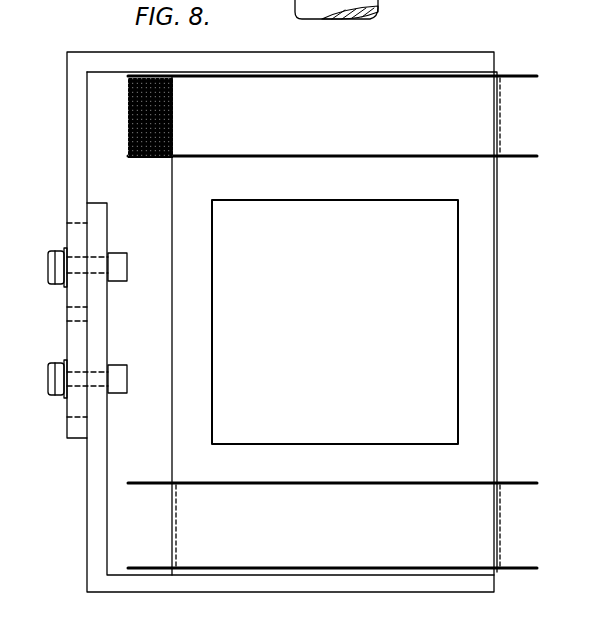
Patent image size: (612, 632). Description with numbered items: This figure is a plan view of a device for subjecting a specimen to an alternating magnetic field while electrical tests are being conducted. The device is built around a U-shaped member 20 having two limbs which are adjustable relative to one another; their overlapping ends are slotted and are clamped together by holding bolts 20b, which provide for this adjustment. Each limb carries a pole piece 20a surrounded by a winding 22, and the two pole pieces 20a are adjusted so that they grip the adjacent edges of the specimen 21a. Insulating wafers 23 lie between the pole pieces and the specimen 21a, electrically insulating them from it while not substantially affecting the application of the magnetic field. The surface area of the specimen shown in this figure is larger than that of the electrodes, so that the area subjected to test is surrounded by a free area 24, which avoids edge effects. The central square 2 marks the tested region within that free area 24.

The substrate 2 is at (458, 313).
The U-shaped member 20 is at (412, 58).
The pole piece 20a is at (487, 124).
The holding bolt 20b is at (63, 381).
The specimen 21a is at (498, 255).
The winding 22 is at (129, 143).
The insulating wafer 23 is at (460, 154).
The free area 24 is at (483, 391).